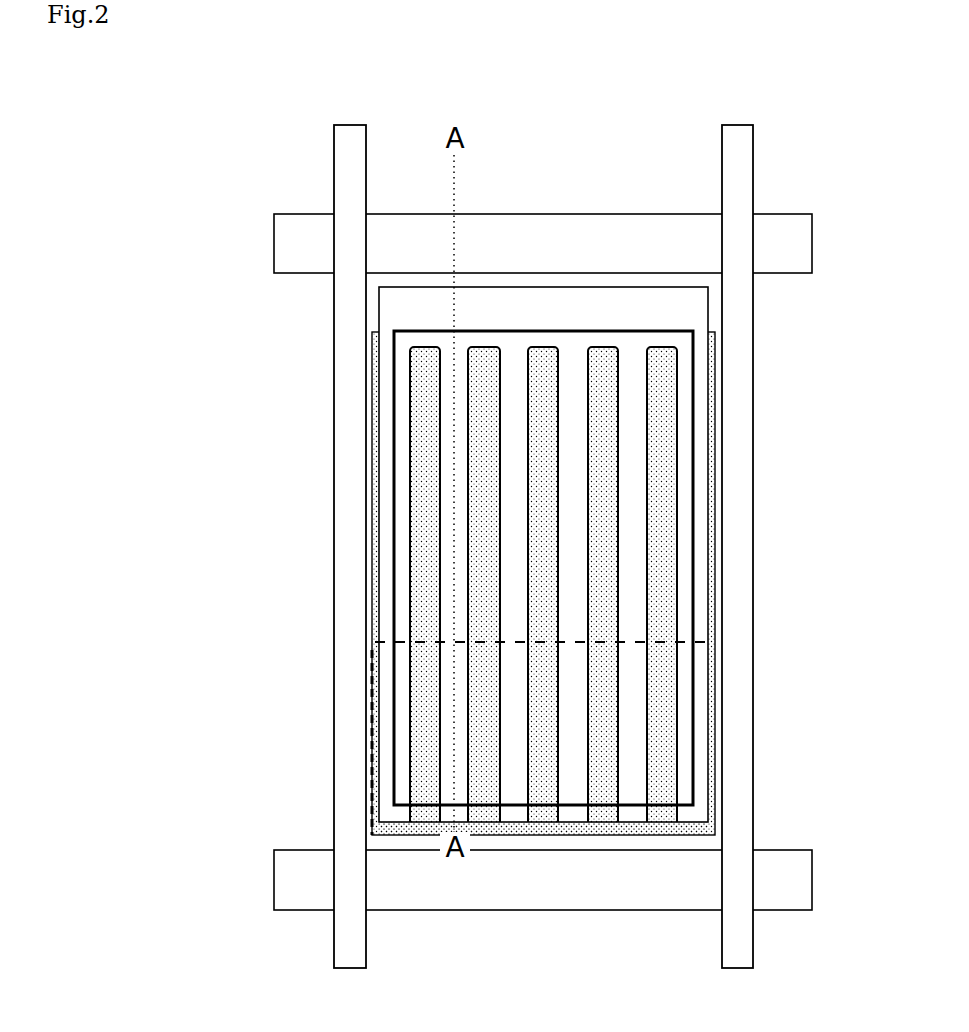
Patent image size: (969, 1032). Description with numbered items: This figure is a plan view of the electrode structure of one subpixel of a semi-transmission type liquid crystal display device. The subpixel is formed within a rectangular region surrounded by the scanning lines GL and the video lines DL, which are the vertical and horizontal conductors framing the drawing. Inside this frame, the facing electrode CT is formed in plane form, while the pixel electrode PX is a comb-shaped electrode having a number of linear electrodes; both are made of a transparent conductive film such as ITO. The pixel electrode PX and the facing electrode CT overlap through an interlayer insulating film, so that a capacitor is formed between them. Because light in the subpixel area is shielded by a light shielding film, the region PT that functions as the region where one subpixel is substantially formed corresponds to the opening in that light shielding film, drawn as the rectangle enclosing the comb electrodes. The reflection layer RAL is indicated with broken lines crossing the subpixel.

The scanning line GL is at (776, 249).
The video line DL is at (352, 428).
The pixel electrode PX is at (515, 360).
The facing electrode CT is at (602, 822).
The region where one subpixel is substantially formed PT is at (690, 496).
The reflection layer RAL is at (447, 638).